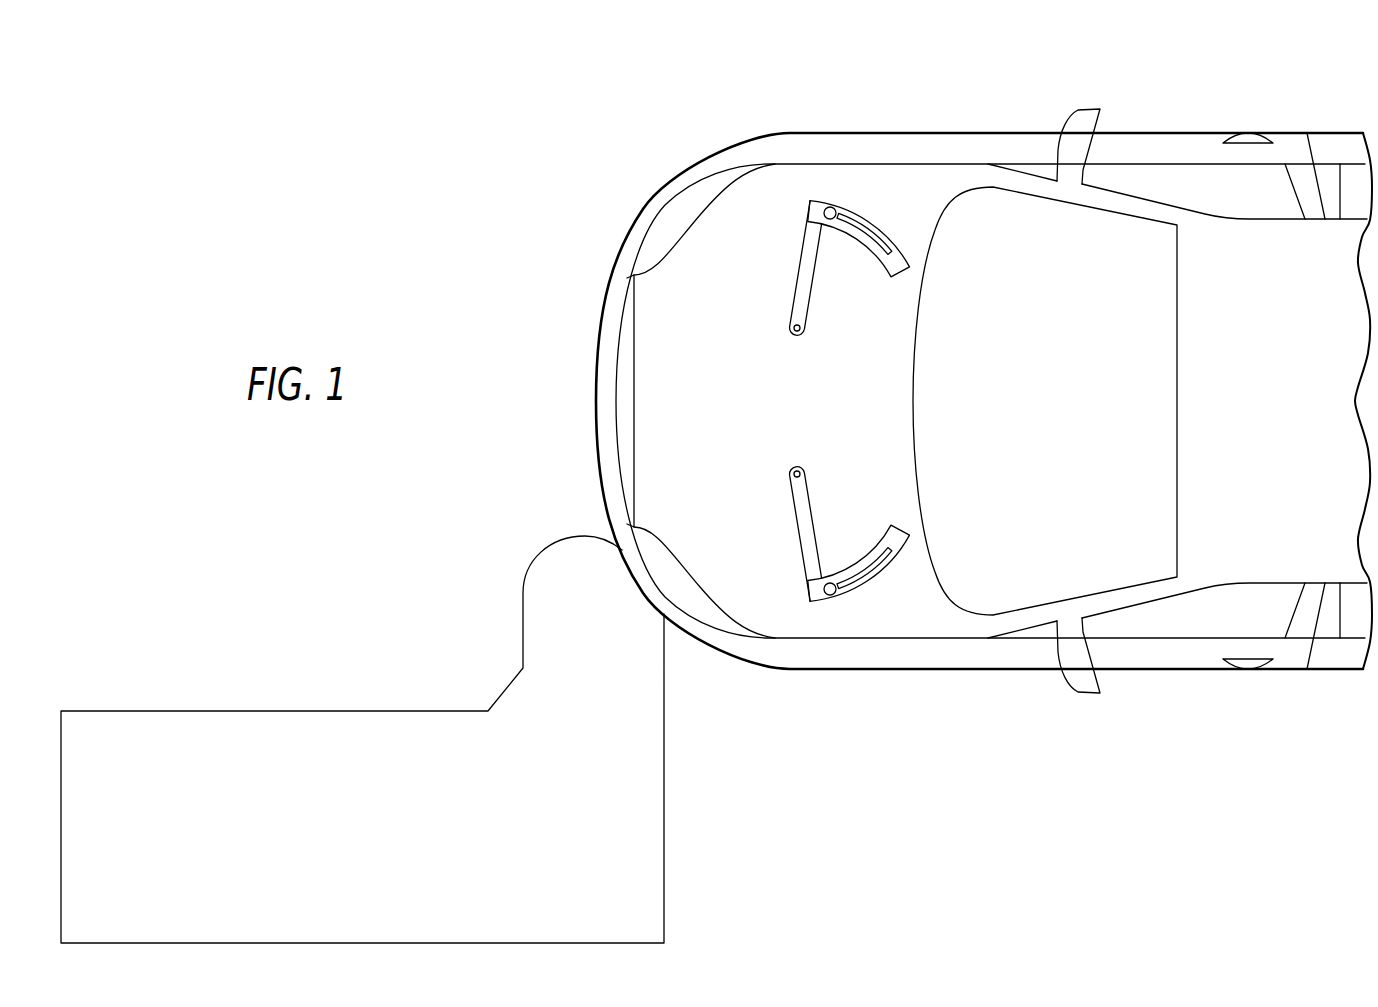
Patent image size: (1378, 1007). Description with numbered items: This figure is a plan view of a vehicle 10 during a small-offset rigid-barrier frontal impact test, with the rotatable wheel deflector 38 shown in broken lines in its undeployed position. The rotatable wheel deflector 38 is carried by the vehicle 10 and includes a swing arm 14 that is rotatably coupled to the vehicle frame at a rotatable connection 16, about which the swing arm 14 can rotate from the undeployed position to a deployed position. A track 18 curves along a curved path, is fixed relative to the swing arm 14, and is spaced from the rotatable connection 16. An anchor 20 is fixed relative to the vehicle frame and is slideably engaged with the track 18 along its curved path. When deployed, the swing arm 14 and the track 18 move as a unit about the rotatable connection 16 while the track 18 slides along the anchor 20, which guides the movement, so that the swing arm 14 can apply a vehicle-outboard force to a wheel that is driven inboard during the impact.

The vehicle 10 is at (842, 88).
The swing arm 14 is at (797, 277).
The rotatable connection 16 is at (774, 333).
The track 18 is at (889, 270).
The anchor 20 is at (832, 207).
The rotatable wheel deflector 38 is at (777, 212).